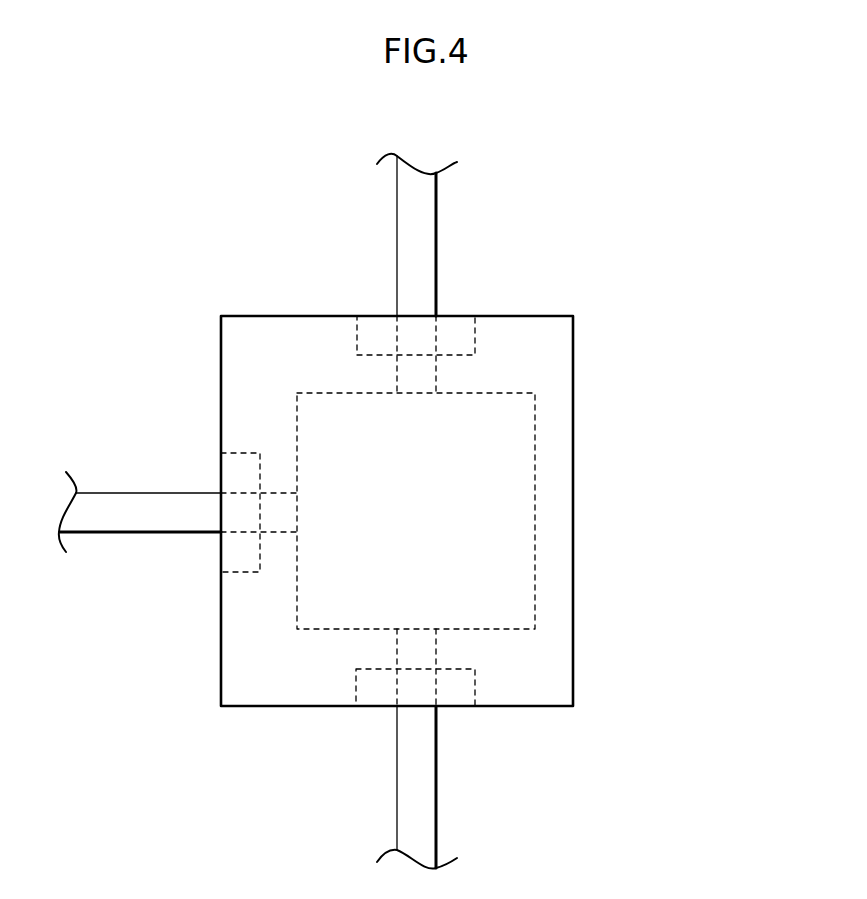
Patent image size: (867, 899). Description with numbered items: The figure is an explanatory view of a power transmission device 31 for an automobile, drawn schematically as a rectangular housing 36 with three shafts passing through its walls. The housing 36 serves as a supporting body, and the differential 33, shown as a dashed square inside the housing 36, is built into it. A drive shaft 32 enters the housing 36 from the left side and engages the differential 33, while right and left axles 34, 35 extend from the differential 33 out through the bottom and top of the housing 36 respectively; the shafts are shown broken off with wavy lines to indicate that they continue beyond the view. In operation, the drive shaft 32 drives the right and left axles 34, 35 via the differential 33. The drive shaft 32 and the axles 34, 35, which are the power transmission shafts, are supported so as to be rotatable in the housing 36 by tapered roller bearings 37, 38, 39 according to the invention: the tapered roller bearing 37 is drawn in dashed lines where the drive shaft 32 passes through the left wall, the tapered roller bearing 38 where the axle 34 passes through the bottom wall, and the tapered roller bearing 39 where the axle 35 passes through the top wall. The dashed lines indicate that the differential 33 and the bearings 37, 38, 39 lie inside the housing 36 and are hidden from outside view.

The power transmission device 31 is at (598, 191).
The drive shaft 32 is at (136, 512).
The differential 33 is at (538, 430).
The axle 34 is at (417, 790).
The axle 35 is at (420, 241).
The housing 36 is at (272, 316).
The tapered roller bearing 37 is at (243, 571).
The tapered roller bearing 38 is at (356, 689).
The tapered roller bearing 39 is at (475, 331).